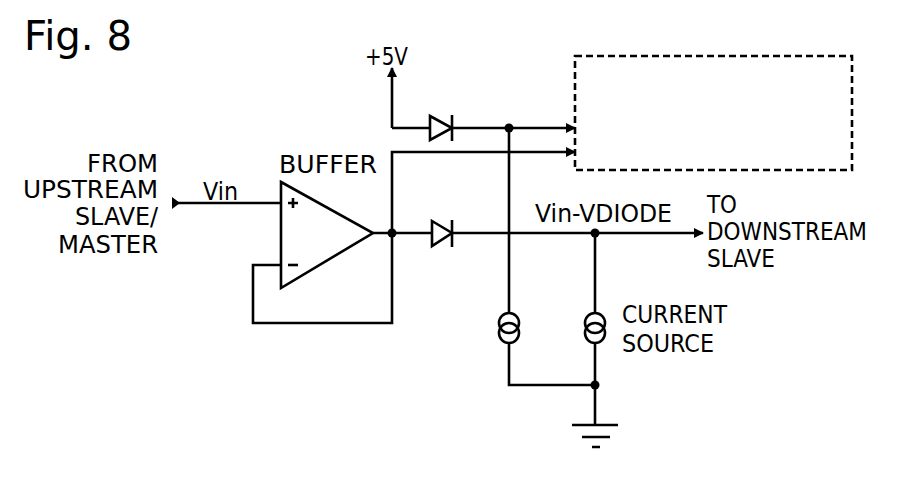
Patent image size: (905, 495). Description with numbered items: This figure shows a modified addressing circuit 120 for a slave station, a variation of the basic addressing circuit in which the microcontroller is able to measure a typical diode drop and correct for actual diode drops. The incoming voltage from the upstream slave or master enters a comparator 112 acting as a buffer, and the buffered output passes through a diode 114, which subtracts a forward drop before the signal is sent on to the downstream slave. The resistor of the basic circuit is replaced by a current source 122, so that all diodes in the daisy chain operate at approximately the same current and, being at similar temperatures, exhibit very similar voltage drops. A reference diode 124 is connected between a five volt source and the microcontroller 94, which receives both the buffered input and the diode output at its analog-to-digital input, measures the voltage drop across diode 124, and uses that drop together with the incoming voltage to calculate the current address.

The microcontroller 94 is at (803, 171).
The comparator 112 is at (311, 273).
The diode 114 is at (441, 247).
The modified addressing circuit 120 is at (746, 427).
The current source 122 is at (648, 364).
The diode 124 is at (433, 115).